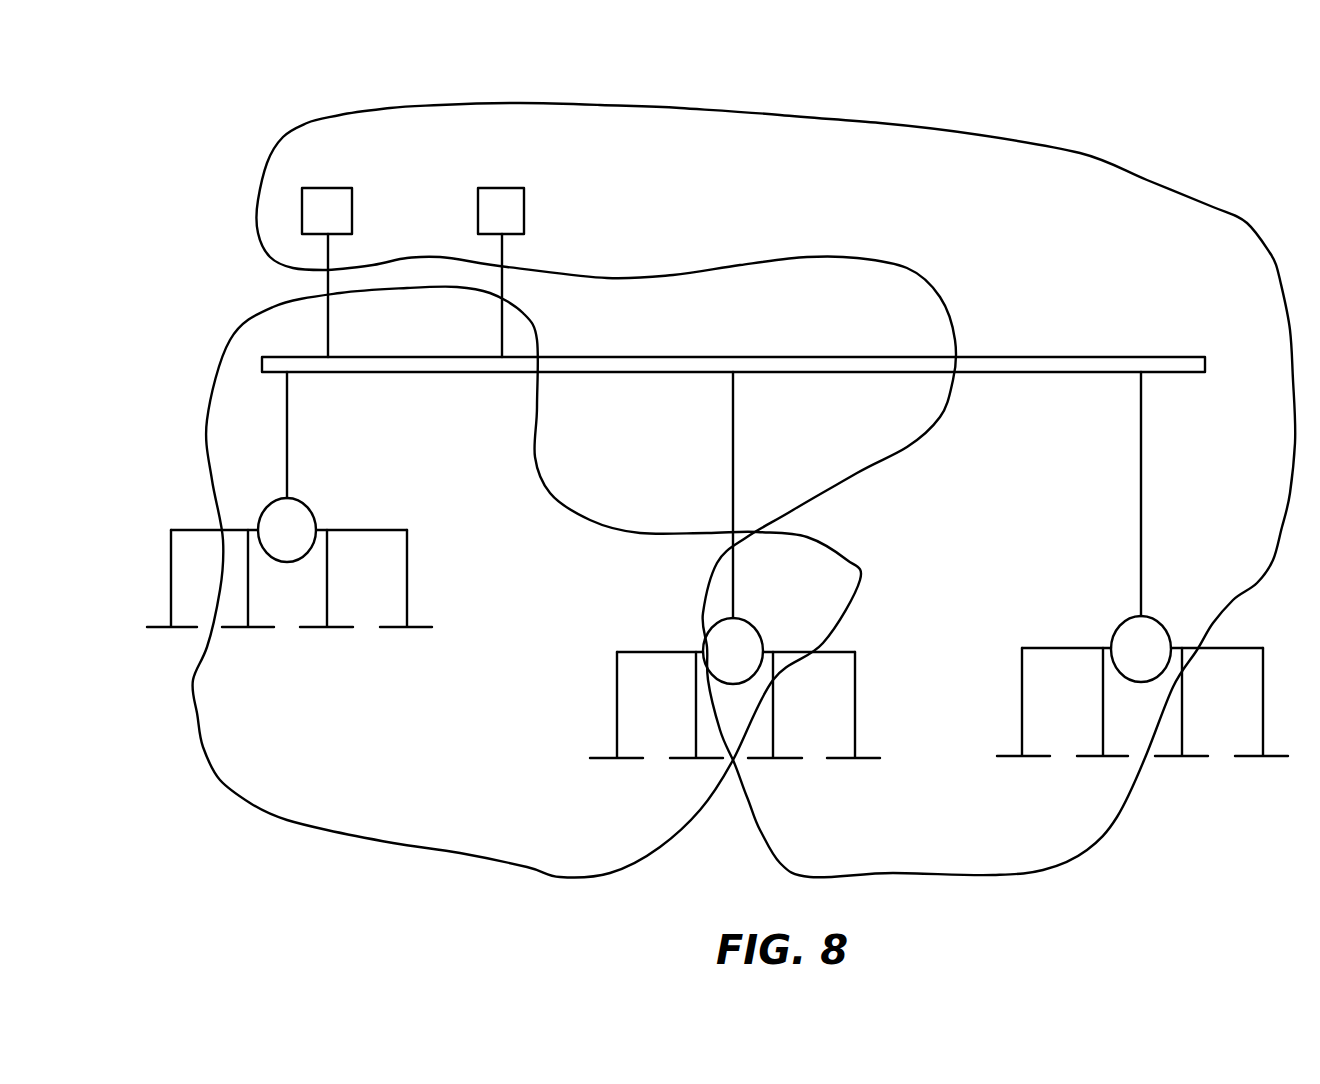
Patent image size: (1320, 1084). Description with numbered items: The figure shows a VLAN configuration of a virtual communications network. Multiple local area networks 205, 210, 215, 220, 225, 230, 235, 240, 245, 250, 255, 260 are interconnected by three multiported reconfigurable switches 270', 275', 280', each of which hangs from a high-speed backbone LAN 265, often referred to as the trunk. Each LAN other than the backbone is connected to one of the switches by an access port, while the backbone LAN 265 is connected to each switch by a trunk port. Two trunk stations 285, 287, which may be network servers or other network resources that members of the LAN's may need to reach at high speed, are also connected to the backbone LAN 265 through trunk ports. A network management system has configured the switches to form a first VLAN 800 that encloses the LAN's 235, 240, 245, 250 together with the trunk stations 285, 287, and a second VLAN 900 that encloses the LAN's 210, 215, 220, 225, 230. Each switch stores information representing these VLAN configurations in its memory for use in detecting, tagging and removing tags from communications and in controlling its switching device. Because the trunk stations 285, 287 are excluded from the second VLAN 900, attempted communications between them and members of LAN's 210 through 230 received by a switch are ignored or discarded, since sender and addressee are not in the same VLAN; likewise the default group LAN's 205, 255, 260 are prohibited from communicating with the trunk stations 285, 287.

The first VLAN 800 is at (1067, 157).
The second VLAN 900 is at (287, 821).
The backbone LAN 265 is at (755, 357).
The trunk station 285 is at (340, 188).
The trunk station 287 is at (510, 188).
The multiported reconfigurable switch 270' is at (289, 467).
The multiported reconfigurable switch 275' is at (736, 528).
The multiported reconfigurable switch 280' is at (1142, 527).
The local area network 205 is at (162, 629).
The local area network 210 is at (238, 629).
The local area network 215 is at (340, 629).
The local area network 220 is at (422, 629).
The local area network 225 is at (603, 760).
The local area network 230 is at (680, 760).
The local area network 235 is at (787, 760).
The local area network 240 is at (868, 760).
The local area network 245 is at (1003, 758).
The local area network 250 is at (1087, 758).
The local area network 255 is at (1195, 758).
The local area network 260 is at (1275, 758).